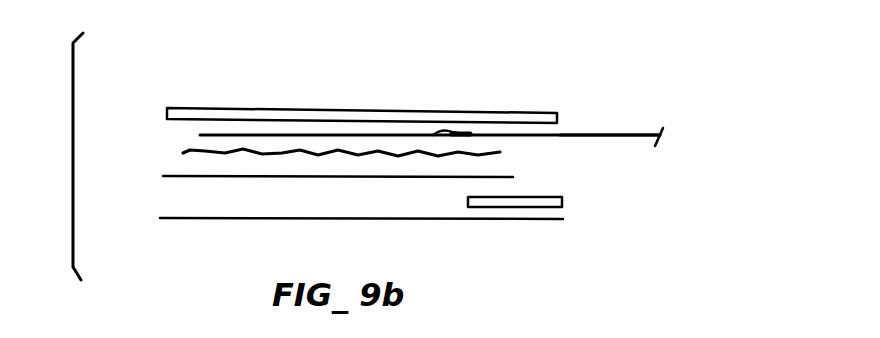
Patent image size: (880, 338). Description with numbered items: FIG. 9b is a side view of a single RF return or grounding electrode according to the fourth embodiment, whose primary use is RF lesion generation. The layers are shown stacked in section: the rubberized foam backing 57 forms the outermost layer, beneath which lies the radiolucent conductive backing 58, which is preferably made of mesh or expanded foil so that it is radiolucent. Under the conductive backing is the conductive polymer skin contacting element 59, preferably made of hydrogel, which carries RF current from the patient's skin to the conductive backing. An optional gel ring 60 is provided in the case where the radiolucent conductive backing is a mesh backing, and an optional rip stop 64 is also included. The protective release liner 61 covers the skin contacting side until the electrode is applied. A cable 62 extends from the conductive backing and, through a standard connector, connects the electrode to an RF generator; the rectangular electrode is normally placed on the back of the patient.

The rubberized foam backing 57 is at (193, 107).
The radiolucent conductive backing 58 is at (200, 135).
The conductive polymer skin contacting element 59 is at (183, 153).
The gel ring 60 is at (168, 176).
The protective release liner 61 is at (160, 218).
The cable 62 is at (636, 135).
The rip stop 64 is at (562, 197).